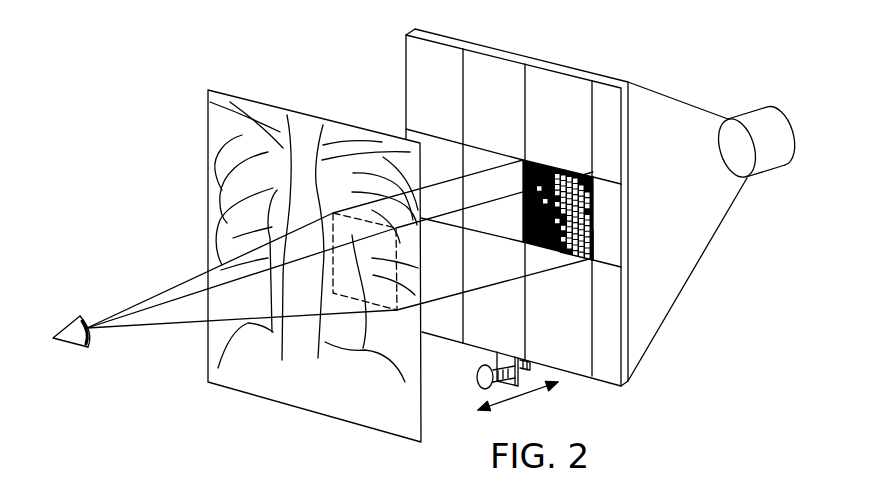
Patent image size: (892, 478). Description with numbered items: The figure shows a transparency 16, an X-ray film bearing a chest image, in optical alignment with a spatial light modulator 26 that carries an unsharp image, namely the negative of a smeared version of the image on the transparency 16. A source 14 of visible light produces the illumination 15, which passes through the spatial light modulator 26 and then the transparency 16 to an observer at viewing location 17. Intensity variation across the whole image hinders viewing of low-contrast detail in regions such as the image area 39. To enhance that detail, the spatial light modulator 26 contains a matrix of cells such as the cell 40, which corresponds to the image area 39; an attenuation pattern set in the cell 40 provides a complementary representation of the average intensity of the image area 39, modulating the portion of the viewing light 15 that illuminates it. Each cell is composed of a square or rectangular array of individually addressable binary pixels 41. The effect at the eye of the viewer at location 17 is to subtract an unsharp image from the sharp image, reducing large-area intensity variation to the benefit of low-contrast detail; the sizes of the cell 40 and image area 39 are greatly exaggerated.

The source of visible light 14 is at (752, 112).
The illumination 15 is at (705, 250).
The transparency 16 is at (208, 170).
The viewing location 17 is at (64, 325).
The spatial light modulator 26 is at (533, 62).
The image area 39 is at (395, 312).
The cell 40 is at (563, 167).
The pixels 41 is at (592, 260).